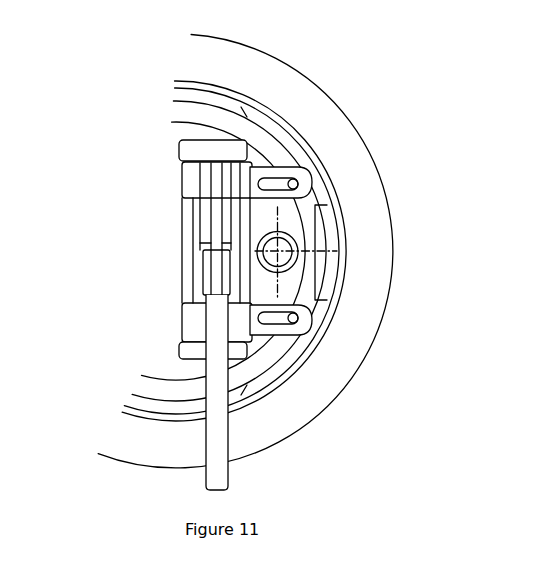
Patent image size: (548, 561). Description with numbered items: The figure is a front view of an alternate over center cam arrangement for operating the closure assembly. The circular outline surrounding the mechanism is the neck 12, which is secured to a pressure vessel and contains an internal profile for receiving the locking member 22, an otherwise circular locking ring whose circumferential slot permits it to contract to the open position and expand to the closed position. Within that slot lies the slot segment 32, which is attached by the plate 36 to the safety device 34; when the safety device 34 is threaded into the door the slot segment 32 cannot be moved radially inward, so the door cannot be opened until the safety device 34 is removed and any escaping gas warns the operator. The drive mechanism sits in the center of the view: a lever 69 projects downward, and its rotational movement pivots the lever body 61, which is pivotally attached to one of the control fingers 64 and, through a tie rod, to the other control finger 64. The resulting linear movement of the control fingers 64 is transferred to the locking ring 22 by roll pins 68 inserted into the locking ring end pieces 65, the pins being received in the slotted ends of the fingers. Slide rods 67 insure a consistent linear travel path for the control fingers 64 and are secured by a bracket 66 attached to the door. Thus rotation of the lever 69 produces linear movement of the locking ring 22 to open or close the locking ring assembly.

The neck 12 is at (243, 62).
The locking member 22 is at (262, 120).
The slot segment 32 is at (335, 218).
The safety device 34 is at (310, 255).
The plate 36 is at (312, 238).
The lever body 61 is at (213, 283).
The control fingers 64 is at (268, 167).
The locking ring end pieces 65 is at (308, 193).
The bracket 66 is at (193, 150).
The slide rods 67 is at (232, 210).
The roll pins 68 is at (299, 185).
The lever 69 is at (217, 460).